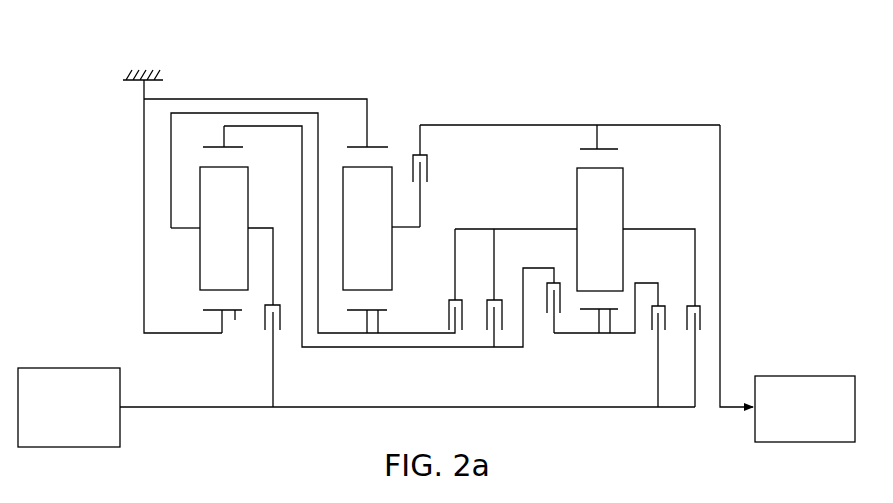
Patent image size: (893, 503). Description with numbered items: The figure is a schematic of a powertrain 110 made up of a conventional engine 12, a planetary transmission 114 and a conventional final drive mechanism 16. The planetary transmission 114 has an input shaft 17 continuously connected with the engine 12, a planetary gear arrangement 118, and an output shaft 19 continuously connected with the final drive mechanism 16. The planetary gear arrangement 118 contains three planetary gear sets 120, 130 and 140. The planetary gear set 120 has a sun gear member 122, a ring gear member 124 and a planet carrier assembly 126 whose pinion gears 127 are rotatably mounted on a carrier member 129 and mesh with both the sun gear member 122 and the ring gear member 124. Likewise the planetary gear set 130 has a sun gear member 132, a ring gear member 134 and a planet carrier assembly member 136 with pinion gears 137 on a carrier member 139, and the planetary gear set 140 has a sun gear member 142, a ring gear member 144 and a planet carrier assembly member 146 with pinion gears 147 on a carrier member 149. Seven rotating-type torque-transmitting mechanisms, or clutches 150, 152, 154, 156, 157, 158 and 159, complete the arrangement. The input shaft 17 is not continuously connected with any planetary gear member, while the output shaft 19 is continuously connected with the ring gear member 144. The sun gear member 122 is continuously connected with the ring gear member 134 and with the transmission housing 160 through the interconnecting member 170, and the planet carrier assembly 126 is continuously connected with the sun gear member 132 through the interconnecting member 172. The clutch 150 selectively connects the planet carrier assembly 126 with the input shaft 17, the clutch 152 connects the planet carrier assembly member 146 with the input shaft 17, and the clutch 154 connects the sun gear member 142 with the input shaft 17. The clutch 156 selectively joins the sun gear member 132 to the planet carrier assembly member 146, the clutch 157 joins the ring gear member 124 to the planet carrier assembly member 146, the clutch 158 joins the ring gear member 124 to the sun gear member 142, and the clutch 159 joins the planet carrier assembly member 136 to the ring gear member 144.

The engine 12 is at (88, 355).
The final drive mechanism 16 is at (790, 362).
The input shaft 17 is at (145, 409).
The output shaft 19 is at (730, 410).
The powertrain 110 is at (122, 175).
The planetary transmission 114 is at (382, 93).
The planetary gear arrangement 118 is at (518, 95).
The planetary gear set 120 is at (212, 314).
The sun gear member 122 is at (236, 320).
The ring gear member 124 is at (215, 143).
The planet carrier assembly 126 is at (197, 233).
The pinion gears 127 is at (224, 228).
The carrier member 129 is at (190, 231).
The planetary gear set 130 is at (355, 314).
The sun gear member 132 is at (380, 314).
The ring gear member 134 is at (358, 143).
The planet carrier assembly member 136 is at (399, 242).
The pinion gears 137 is at (367, 228).
The carrier member 139 is at (405, 230).
The planetary gear set 140 is at (594, 313).
The sun gear member 142 is at (612, 314).
The ring gear member 144 is at (596, 138).
The planet carrier assembly member 146 is at (629, 218).
The pinion gears 147 is at (600, 229).
The carrier member 149 is at (643, 228).
The clutch 150 is at (281, 335).
The clutch 152 is at (704, 304).
The clutch 154 is at (670, 304).
The clutch 156 is at (447, 330).
The clutch 157 is at (487, 331).
The clutch 158 is at (547, 316).
The clutch 159 is at (433, 150).
The transmission housing 160 is at (130, 68).
The interconnecting member 170 is at (252, 98).
The interconnecting member 172 is at (283, 112).